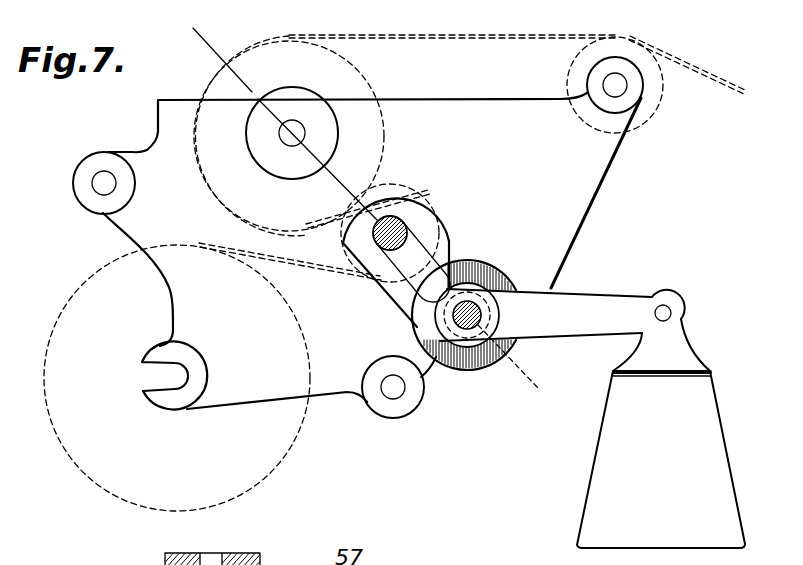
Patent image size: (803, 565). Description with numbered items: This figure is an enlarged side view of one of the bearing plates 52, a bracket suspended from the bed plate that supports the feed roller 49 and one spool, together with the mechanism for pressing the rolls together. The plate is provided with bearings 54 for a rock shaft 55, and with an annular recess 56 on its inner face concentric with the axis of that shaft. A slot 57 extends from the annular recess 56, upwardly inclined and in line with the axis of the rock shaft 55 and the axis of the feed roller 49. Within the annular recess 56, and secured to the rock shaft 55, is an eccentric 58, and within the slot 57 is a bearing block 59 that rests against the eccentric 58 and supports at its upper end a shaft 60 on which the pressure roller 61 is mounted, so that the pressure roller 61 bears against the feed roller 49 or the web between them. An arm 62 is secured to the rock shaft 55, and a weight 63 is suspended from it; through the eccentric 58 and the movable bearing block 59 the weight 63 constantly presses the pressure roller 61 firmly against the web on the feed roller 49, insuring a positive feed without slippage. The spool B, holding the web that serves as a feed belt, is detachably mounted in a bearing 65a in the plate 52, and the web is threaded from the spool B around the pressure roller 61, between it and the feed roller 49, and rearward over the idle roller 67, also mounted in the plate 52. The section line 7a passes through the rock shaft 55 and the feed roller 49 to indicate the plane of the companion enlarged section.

The feed roller 49 is at (381, 80).
The bearing plates 52 is at (550, 245).
The bearings 54 is at (493, 564).
The rock shaft 55 is at (482, 313).
The annular recesses 56 is at (478, 366).
The slots 57 is at (386, 216).
The eccentrics 58 is at (430, 328).
The bearing blocks 59 is at (428, 266).
The shaft 60 is at (418, 253).
The pressure roller 61 is at (343, 250).
The arm 62 is at (562, 315).
The weight 63 is at (595, 492).
The bearing 65a is at (171, 402).
The idle roller 67 is at (650, 108).
The section line 7a is at (373, 209).
The spool B is at (66, 290).